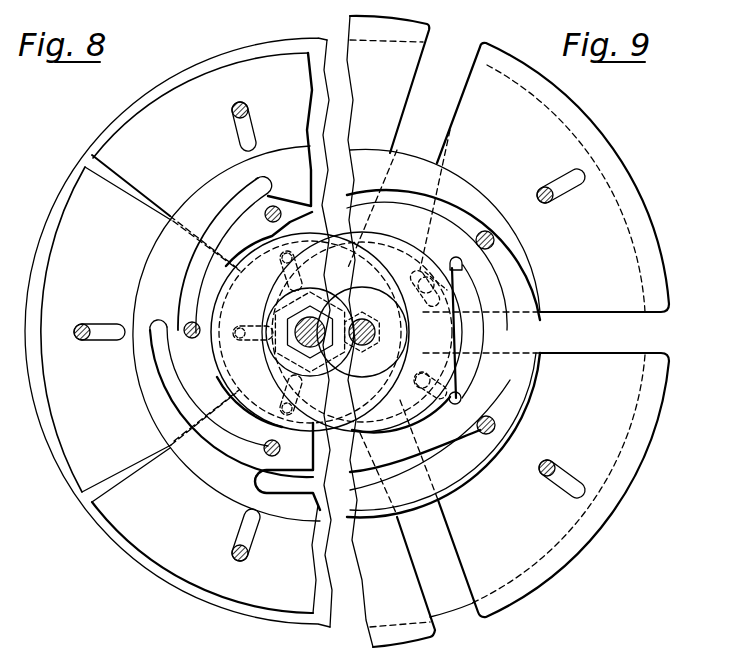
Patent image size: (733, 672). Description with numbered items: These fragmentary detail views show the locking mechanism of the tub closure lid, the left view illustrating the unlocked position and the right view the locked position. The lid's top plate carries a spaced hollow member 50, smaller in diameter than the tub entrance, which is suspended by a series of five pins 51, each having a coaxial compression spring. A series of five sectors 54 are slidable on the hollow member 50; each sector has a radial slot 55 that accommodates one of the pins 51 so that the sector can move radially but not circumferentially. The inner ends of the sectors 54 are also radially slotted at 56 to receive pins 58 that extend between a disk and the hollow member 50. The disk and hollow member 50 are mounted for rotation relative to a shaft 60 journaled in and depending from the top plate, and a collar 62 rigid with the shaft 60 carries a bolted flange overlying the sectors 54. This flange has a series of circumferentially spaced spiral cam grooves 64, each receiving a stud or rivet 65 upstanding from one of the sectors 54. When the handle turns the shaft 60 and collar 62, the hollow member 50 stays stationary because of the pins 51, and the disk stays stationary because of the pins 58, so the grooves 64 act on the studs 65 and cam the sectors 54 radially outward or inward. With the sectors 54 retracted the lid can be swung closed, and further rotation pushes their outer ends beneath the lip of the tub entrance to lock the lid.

In FIG. 8, the hollow member 50 is at (87, 512).
In FIG. 9, the hollow member 50 is at (455, 607).
In FIG. 8, the pin 51 is at (248, 108).
In FIG. 9, the pin 51 is at (538, 193).
In FIG. 8, the sector 54 is at (142, 113).
In FIG. 9, the sector 54 is at (633, 187).
In FIG. 8, the radial slot 55 is at (253, 128).
In FIG. 9, the radial slot 55 is at (573, 190).
In FIG. 8, the radial slot 56 is at (245, 338).
In FIG. 9, the radial slot 56 is at (466, 386).
In FIG. 8, the pin 58 is at (236, 326).
In FIG. 9, the pin 58 is at (414, 287).
In FIG. 8, the shaft 60 is at (320, 343).
In FIG. 9, the shaft 60 is at (366, 322).
In FIG. 8, the collar 62 is at (218, 368).
In FIG. 9, the collar 62 is at (422, 255).
In FIG. 8, the spiral cam groove 64 is at (182, 292).
In FIG. 9, the spiral cam groove 64 is at (450, 207).
In FIG. 8, the stud 65 is at (268, 220).
In FIG. 9, the stud 65 is at (488, 249).